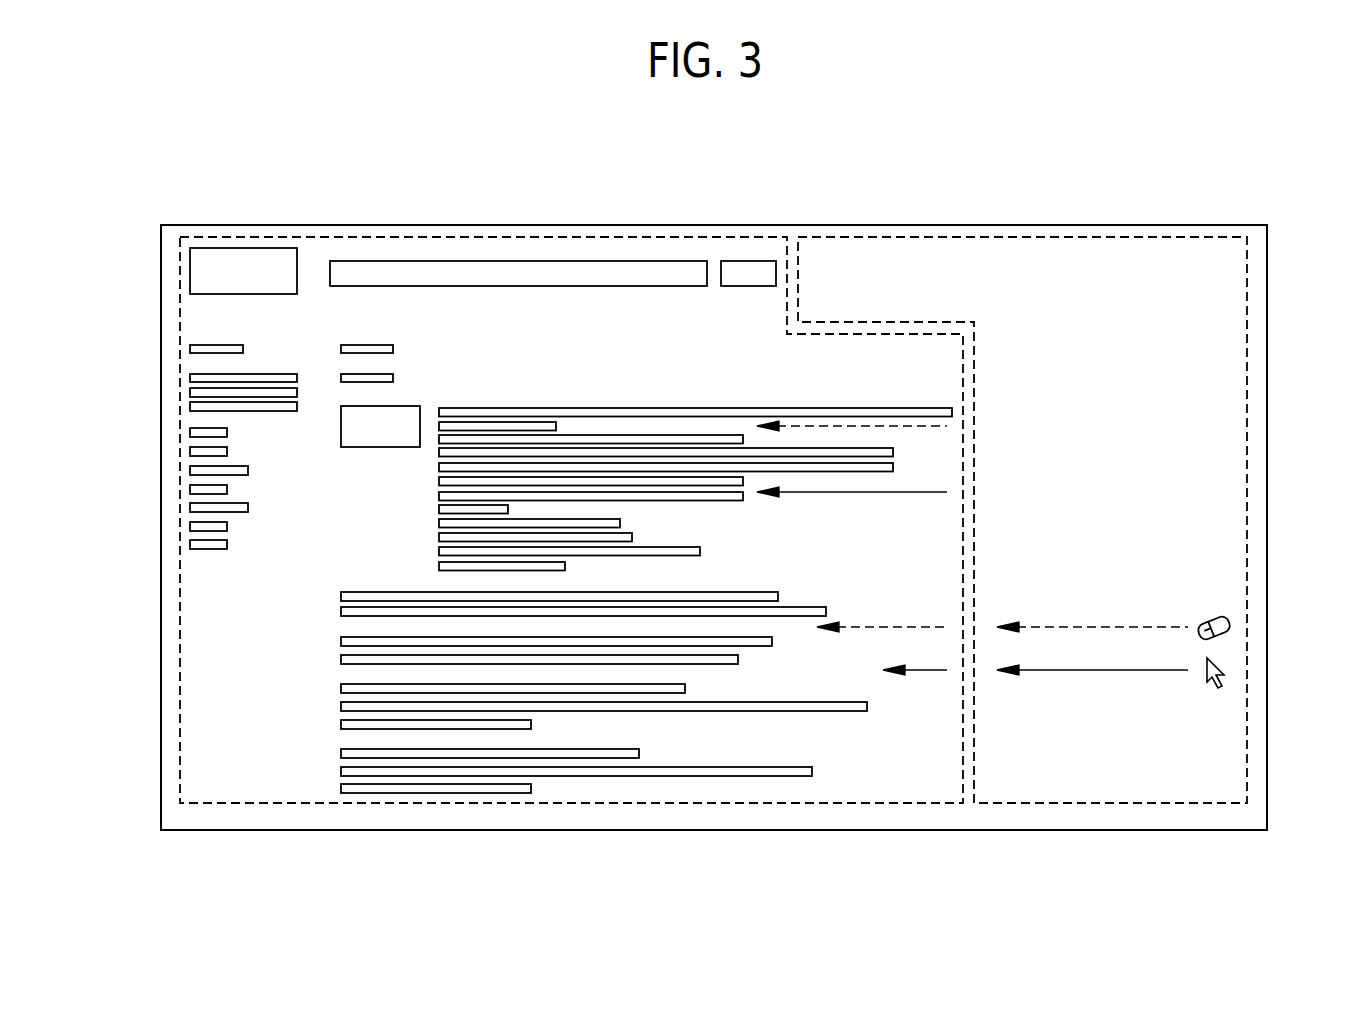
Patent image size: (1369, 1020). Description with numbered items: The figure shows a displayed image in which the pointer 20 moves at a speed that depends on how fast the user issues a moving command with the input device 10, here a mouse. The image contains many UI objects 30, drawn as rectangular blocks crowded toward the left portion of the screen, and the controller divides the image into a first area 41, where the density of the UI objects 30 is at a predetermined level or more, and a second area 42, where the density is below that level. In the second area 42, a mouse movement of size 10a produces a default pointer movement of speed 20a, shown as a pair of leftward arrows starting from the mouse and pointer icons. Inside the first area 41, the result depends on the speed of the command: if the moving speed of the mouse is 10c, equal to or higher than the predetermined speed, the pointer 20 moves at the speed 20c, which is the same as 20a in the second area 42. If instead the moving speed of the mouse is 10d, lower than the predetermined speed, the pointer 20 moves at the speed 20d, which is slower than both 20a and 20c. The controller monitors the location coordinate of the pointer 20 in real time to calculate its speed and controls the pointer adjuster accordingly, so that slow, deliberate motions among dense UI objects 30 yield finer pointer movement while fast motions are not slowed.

The input device 10 is at (1224, 621).
The pointer 20 is at (1222, 665).
The UI object 30 is at (352, 573).
The first area 41 is at (646, 803).
The second area 42 is at (1063, 803).
The size of the user's command for moving the pointer 10a is at (1040, 627).
The moving speed of the pointer 20a is at (1060, 672).
The moving speed of the mouse at or above the predetermined speed 10c is at (818, 426).
The moving speed of the pointer 20c is at (908, 492).
The moving speed of the mouse below the predetermined speed 10d is at (863, 627).
The moving speed of the pointer 20d is at (916, 672).